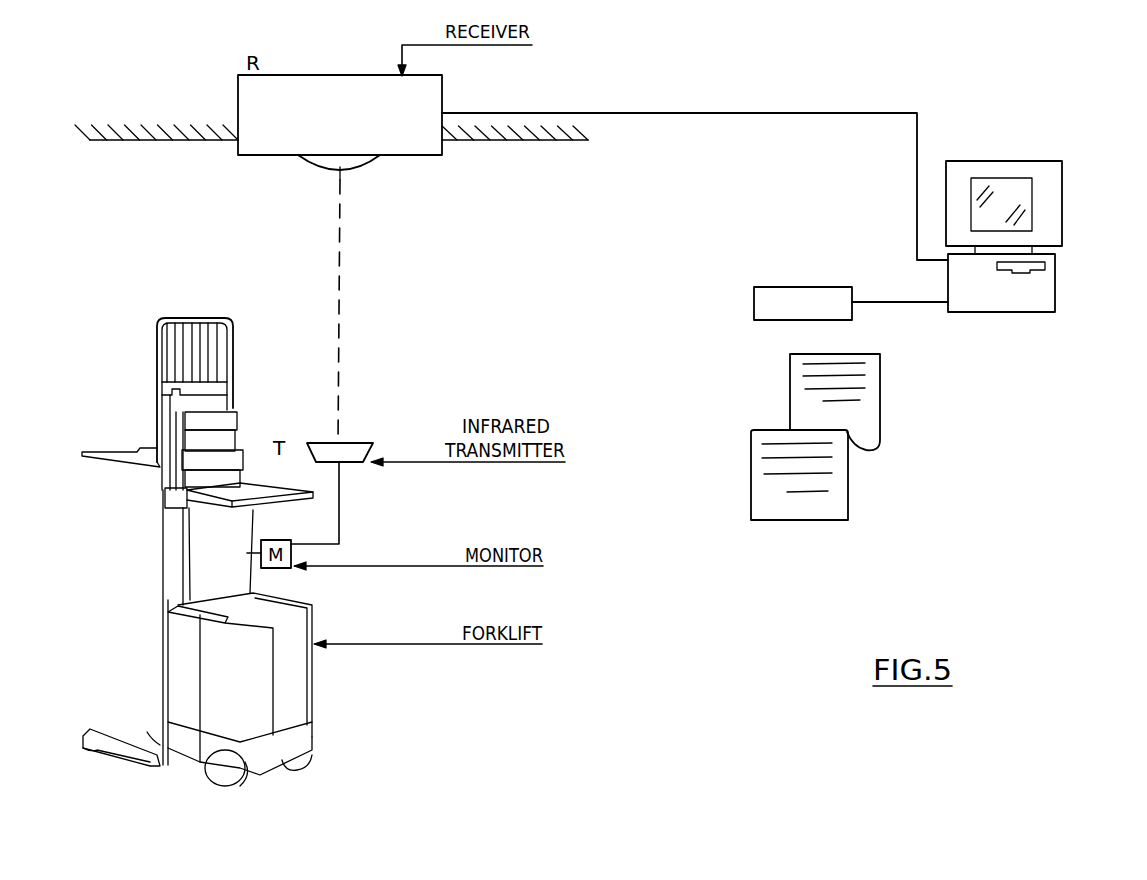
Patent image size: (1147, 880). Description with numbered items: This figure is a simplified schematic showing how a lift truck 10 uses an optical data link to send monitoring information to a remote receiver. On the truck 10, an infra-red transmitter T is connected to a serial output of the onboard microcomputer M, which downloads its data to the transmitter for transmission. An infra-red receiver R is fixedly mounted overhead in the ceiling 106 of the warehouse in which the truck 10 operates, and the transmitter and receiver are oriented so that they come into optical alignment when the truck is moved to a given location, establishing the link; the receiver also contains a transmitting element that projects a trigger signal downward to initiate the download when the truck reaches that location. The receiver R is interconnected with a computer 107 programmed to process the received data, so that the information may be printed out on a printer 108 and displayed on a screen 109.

The truck 10 is at (123, 413).
The ceiling 106 is at (540, 143).
The computer 107 is at (1043, 213).
The printer 108 is at (802, 286).
The screen 109 is at (995, 190).